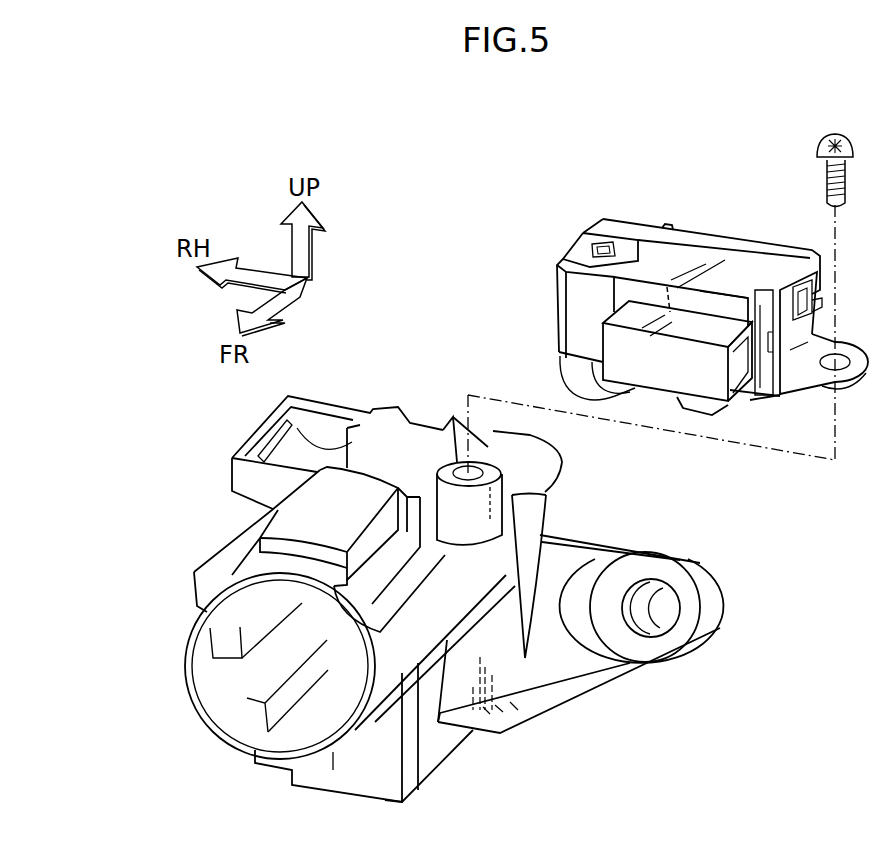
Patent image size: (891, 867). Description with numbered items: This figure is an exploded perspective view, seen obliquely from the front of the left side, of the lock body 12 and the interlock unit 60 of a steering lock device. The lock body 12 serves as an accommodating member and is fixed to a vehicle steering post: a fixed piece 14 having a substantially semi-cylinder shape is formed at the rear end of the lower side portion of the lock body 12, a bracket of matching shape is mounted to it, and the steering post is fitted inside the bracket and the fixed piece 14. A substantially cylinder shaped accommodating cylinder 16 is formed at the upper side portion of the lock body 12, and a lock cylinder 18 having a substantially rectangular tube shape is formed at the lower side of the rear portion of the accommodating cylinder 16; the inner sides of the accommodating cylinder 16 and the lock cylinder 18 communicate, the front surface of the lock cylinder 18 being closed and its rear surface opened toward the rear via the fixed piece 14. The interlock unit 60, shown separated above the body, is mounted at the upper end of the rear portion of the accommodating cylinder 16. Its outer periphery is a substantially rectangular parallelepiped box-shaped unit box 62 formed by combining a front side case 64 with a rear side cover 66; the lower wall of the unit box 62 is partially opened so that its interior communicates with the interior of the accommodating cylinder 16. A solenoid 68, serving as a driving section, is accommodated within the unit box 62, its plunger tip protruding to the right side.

The lock body 12 is at (221, 540).
The fixed piece 14 is at (562, 707).
The accommodating cylinder 16 is at (203, 704).
The lock cylinder 18 is at (441, 762).
The interlock unit 60 is at (600, 205).
The unit box 62 is at (752, 165).
The front side case 64 is at (678, 253).
The rear side cover 66 is at (728, 237).
The solenoid 68 is at (710, 390).